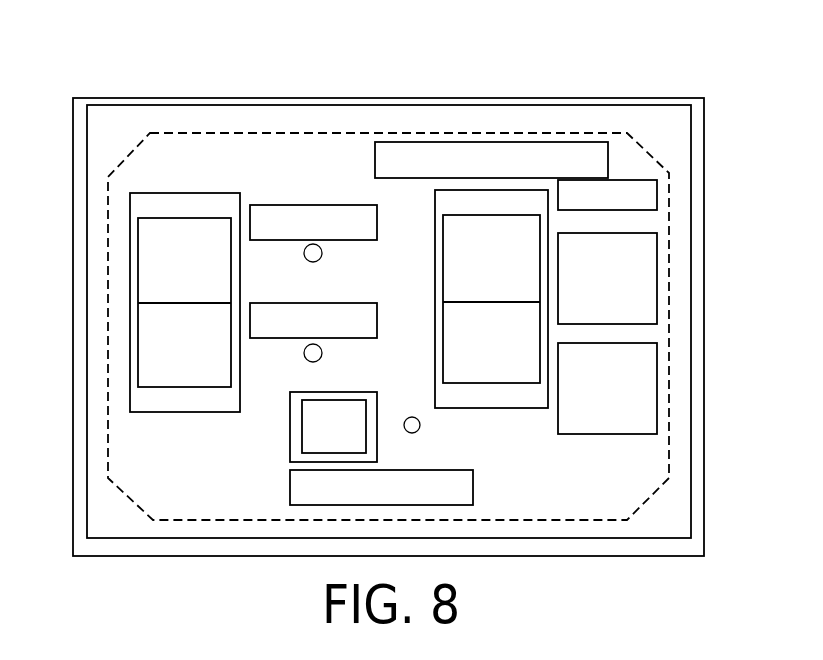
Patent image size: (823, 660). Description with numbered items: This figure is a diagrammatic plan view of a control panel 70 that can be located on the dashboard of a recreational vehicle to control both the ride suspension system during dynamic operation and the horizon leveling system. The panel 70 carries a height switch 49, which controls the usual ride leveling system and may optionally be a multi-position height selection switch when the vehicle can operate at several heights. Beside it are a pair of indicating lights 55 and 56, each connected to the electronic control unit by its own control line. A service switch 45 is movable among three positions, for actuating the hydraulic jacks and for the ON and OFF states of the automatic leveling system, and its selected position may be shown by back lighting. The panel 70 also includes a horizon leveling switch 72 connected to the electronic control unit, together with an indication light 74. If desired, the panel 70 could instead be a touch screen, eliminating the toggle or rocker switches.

The control panel 70 is at (599, 86).
The height switch 49 is at (152, 342).
The service switch 45 is at (455, 341).
The indicating light 55 is at (318, 261).
The indicating light 56 is at (318, 361).
The horizon leveling switch 72 is at (308, 428).
The indication light 74 is at (417, 432).